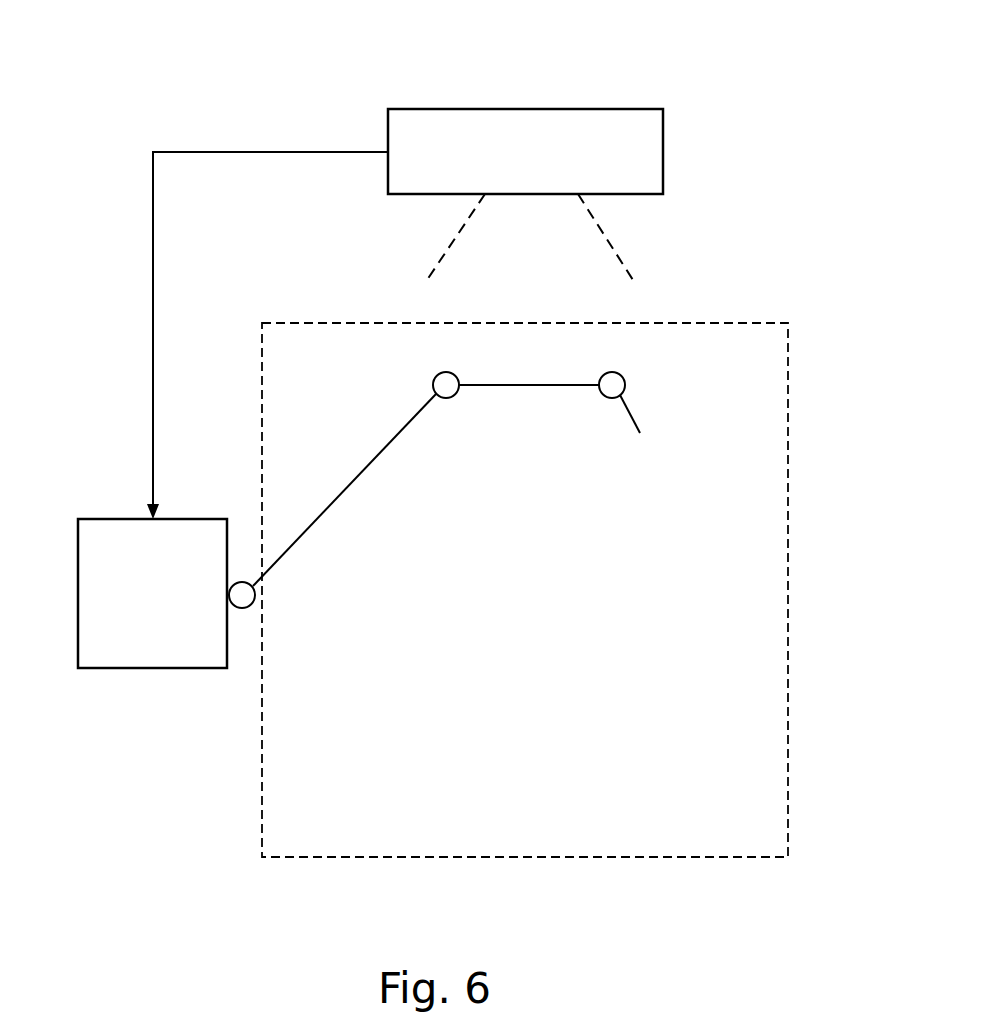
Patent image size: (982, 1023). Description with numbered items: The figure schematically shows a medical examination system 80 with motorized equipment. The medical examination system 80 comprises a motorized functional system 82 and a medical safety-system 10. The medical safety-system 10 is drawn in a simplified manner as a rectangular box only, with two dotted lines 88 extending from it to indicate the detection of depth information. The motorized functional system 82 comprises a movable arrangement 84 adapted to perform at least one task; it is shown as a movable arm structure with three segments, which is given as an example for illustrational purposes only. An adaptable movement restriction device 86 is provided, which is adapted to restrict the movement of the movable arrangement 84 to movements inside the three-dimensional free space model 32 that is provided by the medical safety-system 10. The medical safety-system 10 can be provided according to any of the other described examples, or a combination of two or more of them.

The medical safety-system 10 is at (587, 107).
The 3D free space model 32 is at (790, 591).
The medical examination system 80 is at (778, 242).
The motorized functional system 82 is at (122, 446).
The movable arrangement 84 is at (636, 412).
The adaptable movement restriction device 86 is at (172, 532).
The dotted lines 88 is at (613, 248).